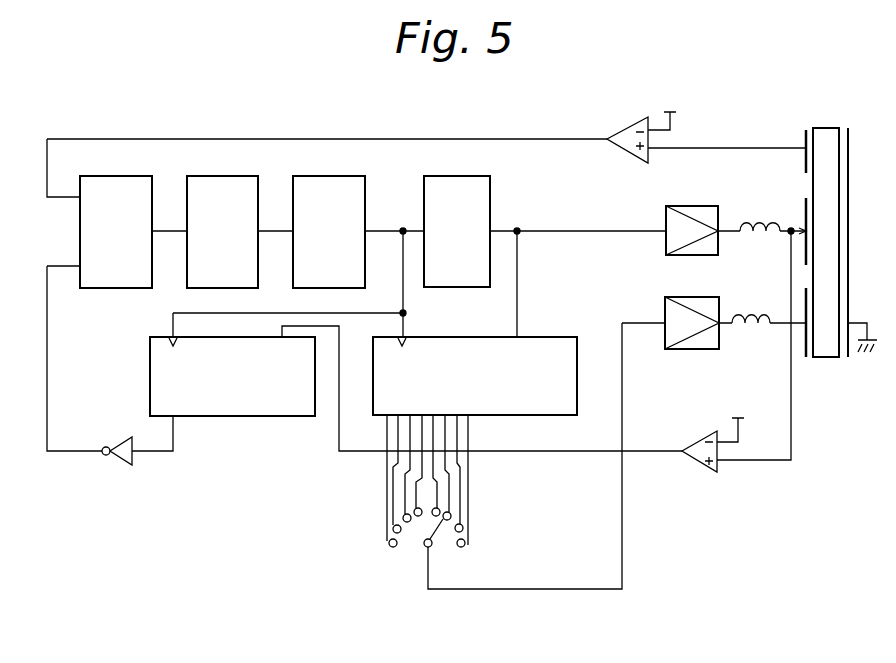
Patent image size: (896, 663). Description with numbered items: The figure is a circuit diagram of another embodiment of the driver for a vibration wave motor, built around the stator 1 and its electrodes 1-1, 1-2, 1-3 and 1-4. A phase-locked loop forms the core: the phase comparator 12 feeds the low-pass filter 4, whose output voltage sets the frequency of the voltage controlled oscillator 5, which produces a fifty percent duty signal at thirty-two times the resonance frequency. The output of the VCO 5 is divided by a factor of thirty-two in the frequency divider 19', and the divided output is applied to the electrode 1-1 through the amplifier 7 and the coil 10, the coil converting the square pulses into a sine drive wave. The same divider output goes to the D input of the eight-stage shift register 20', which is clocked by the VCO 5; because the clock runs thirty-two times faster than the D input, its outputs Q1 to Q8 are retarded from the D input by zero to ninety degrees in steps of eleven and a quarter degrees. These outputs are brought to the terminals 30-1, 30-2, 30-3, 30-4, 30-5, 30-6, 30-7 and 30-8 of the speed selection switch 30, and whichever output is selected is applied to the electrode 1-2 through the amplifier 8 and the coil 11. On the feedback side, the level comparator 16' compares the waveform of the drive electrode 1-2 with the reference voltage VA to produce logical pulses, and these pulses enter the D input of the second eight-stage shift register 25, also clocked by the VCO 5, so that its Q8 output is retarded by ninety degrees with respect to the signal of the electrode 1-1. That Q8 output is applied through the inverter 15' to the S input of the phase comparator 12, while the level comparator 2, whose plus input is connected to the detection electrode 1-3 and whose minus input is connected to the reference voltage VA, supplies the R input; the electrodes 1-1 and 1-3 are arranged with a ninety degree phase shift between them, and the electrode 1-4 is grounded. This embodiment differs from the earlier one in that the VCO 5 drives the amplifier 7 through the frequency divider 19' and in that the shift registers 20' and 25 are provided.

The stator 1 is at (826, 128).
The electrode 1-1 is at (805, 225).
The drive electrode 1-2 is at (800, 340).
The detection electrode 1-3 is at (805, 140).
The electrode 1-4 is at (848, 323).
The level comparator 2 is at (622, 130).
The low-pass filter 4 is at (233, 176).
The voltage controlled oscillator 5 is at (318, 176).
The amplifier 7 is at (690, 206).
The amplifier 8 is at (690, 297).
The coil 10 is at (760, 235).
The coil 11 is at (752, 327).
The phase comparator 12 is at (100, 288).
The inverter 15' is at (116, 475).
The level comparator 16' is at (718, 458).
The frequency divider 19' is at (459, 218).
The eight-stage shift register 20' is at (479, 356).
The eight-stage shift register 25 is at (240, 416).
The speed selection switch 30 is at (425, 546).
The terminal 30-1 is at (389, 544).
The terminal 30-2 is at (393, 529).
The terminal 30-3 is at (403, 518).
The terminal 30-4 is at (415, 509).
The terminal 30-5 is at (439, 510).
The terminal 30-6 is at (451, 516).
The terminal 30-7 is at (463, 528).
The terminal 30-8 is at (464, 545).